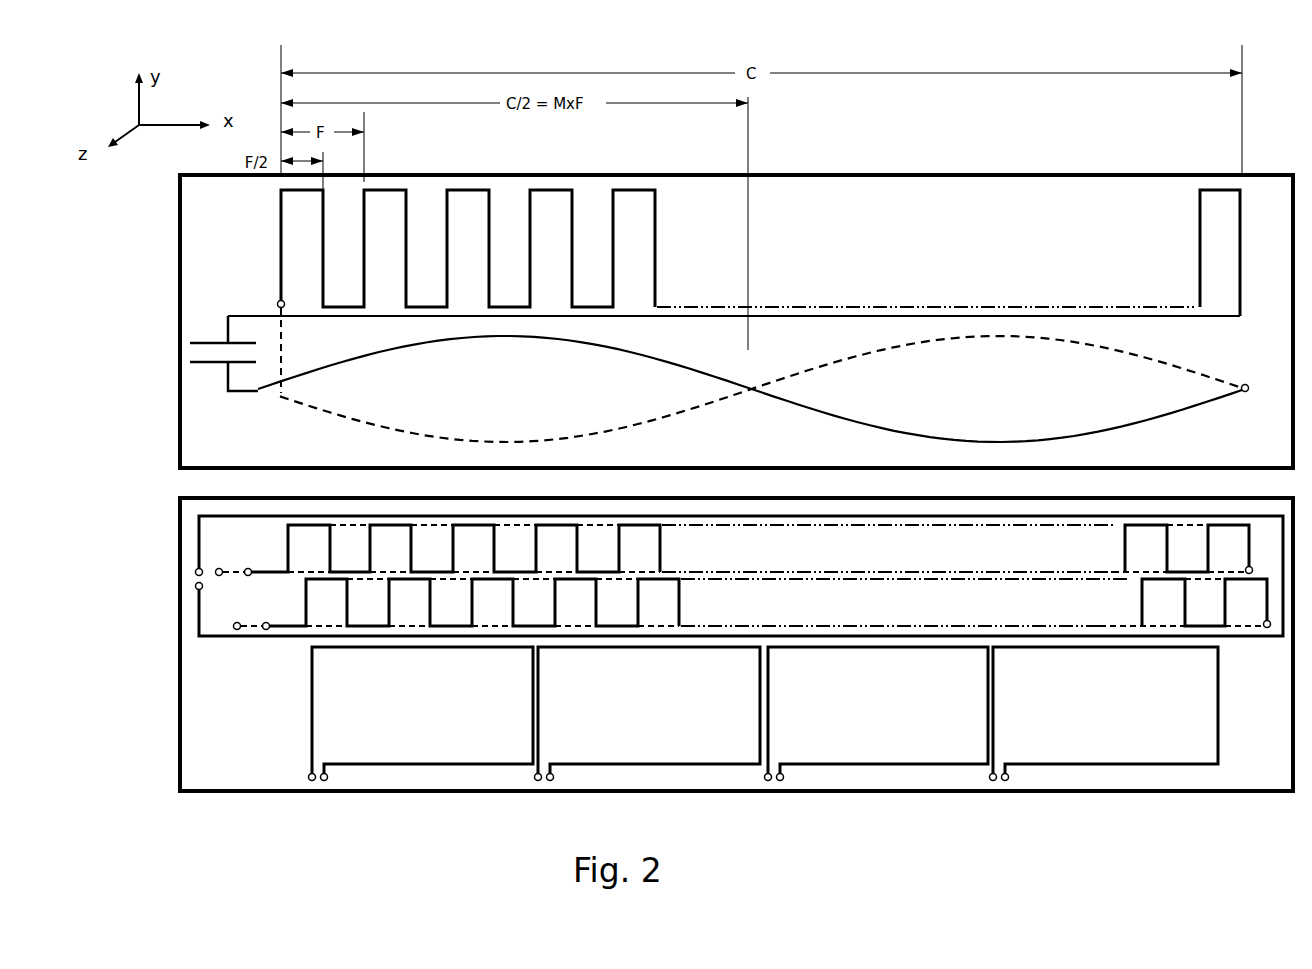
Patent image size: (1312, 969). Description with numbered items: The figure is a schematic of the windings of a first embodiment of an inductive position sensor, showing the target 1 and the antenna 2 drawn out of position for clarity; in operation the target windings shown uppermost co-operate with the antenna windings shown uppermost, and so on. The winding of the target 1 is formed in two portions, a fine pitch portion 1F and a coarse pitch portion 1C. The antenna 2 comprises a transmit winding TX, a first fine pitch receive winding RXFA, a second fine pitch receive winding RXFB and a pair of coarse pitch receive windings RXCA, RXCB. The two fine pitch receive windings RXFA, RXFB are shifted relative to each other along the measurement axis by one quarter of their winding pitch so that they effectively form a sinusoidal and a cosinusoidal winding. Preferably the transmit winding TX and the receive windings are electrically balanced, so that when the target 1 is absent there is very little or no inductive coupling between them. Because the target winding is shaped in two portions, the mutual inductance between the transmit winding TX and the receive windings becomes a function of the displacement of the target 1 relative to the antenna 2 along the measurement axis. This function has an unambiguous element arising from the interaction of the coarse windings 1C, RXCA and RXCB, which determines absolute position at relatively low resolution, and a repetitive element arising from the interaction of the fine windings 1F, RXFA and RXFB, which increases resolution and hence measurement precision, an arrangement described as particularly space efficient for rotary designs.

The target 1 is at (232, 297).
The fine pitch portion 1F is at (280, 255).
The coarse pitch portion 1C is at (365, 413).
The antenna 2 is at (258, 669).
The transmit winding TX is at (197, 558).
The first fine pitch receive winding RXFA is at (268, 542).
The second fine pitch receive winding RXFB is at (286, 607).
The coarse pitch receive winding RXCA is at (345, 727).
The coarse pitch receive winding RXCB is at (639, 714).